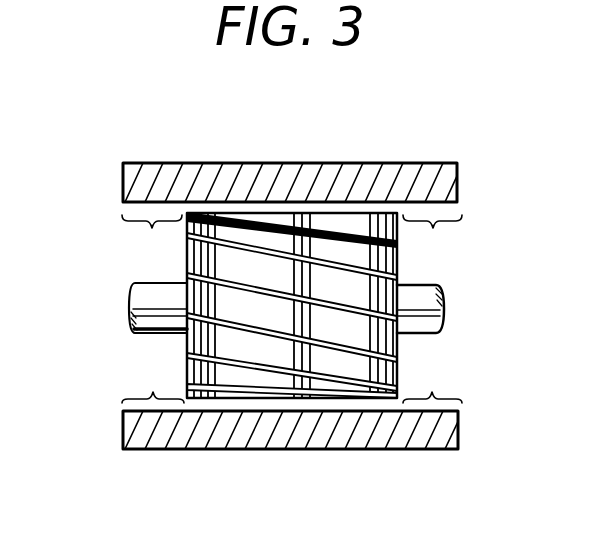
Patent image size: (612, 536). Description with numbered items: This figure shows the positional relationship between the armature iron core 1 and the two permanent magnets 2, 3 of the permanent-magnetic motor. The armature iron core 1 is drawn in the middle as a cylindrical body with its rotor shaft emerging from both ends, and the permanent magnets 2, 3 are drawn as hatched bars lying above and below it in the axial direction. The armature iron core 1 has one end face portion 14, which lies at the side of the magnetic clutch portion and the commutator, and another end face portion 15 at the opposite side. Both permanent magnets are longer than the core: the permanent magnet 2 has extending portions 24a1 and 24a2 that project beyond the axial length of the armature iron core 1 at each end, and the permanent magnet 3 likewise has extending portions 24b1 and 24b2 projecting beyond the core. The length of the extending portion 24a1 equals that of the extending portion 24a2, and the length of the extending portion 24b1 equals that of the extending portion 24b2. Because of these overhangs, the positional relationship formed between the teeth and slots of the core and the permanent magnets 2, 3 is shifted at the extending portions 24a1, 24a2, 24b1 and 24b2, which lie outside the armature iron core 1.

The armature iron core 1 is at (309, 305).
The permanent magnet 2 is at (284, 155).
The permanent magnet 3 is at (284, 454).
The one end face portion 14 is at (152, 329).
The another end face portion 15 is at (428, 329).
The extending portion 24a1 is at (133, 243).
The extending portion 24a2 is at (454, 245).
The extending portion 24b1 is at (117, 386).
The extending portion 24b2 is at (464, 388).